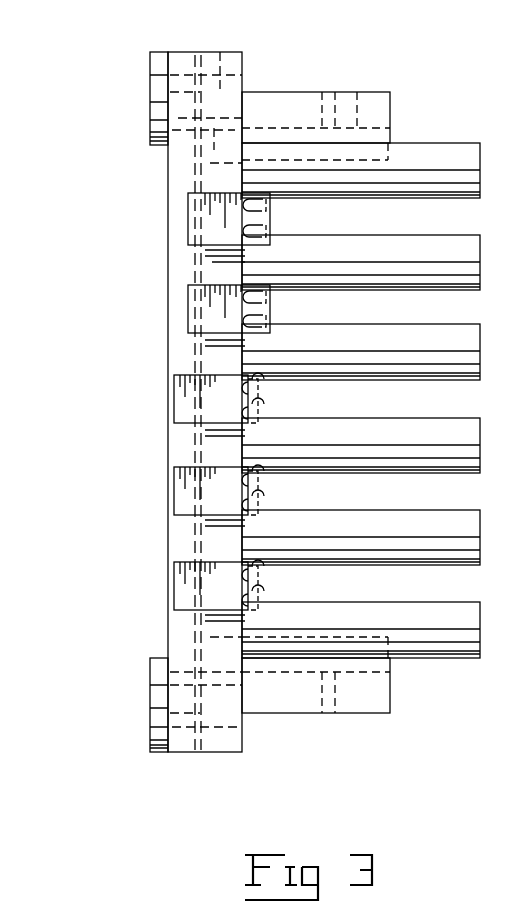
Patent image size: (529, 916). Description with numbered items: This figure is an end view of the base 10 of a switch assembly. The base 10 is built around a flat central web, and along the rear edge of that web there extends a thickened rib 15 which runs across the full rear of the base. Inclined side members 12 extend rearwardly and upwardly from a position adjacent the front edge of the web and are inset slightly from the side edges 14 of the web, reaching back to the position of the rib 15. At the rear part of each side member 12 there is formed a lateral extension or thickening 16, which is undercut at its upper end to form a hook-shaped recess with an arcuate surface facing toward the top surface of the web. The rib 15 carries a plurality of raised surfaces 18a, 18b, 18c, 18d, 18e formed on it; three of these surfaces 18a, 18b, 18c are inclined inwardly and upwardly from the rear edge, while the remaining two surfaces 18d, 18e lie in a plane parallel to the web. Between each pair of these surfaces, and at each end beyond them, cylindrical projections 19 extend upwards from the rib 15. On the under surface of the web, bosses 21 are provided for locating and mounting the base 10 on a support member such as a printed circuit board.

The base 10 is at (243, 53).
The side members 12 is at (358, 93).
The side edges 14 is at (218, 52).
The thickened rib 15 is at (181, 444).
The lateral extension 16 is at (272, 97).
The surface 18a is at (262, 585).
The surface 18b is at (262, 495).
The surface 18c is at (262, 403).
The surface 18d is at (271, 311).
The surface 18e is at (271, 219).
The cylindrical projections 19 is at (470, 178).
The bosses 21 is at (150, 61).